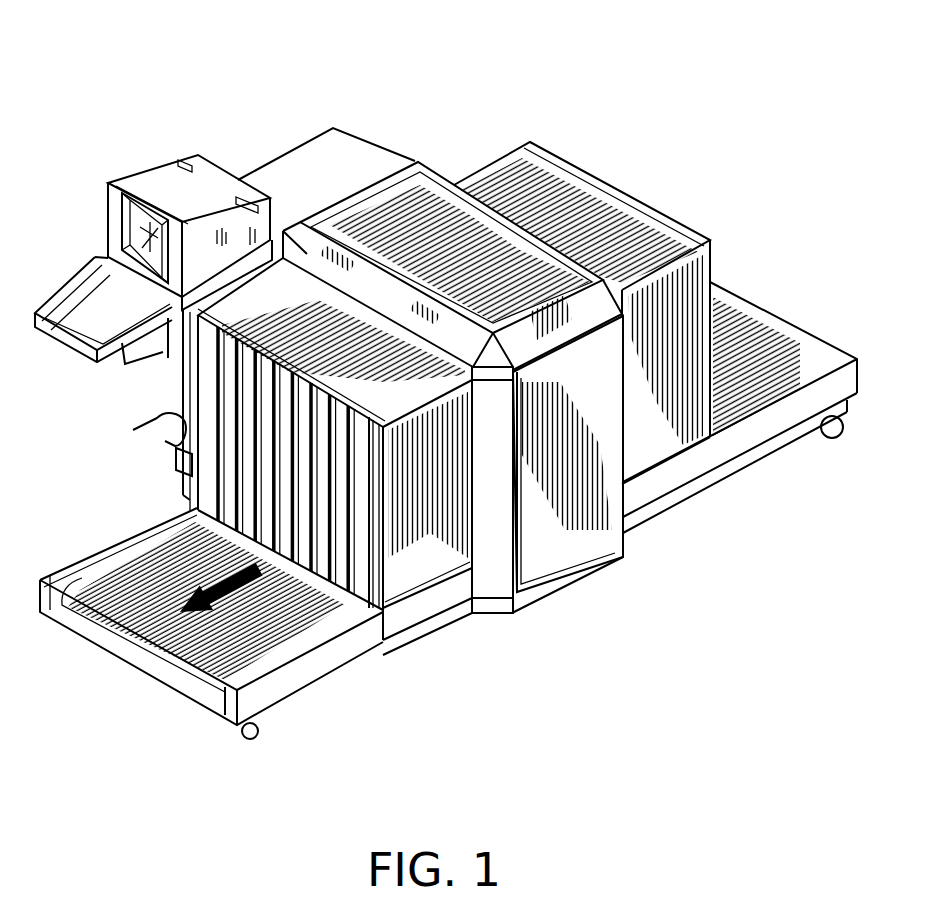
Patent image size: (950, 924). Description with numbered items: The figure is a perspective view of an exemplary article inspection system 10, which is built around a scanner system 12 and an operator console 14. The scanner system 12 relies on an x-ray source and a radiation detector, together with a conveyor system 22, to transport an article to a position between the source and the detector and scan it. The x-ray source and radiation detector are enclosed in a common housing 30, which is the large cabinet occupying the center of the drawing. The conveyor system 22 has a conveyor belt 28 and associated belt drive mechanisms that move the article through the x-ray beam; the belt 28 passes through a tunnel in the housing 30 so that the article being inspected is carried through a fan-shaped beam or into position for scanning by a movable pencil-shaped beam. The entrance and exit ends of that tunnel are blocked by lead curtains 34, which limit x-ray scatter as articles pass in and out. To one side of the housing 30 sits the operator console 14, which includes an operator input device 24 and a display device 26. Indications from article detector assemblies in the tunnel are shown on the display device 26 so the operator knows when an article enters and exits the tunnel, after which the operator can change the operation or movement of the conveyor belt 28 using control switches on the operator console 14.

The inspection system 10 is at (623, 100).
The scanner system 12 is at (700, 227).
The operator console 14 is at (153, 165).
The conveyor system 22 is at (777, 349).
The operator input device 24 is at (68, 290).
The display device 26 is at (213, 174).
The conveyor belt 28 is at (127, 630).
The housing 30 is at (567, 563).
The lead curtains 34 is at (333, 567).